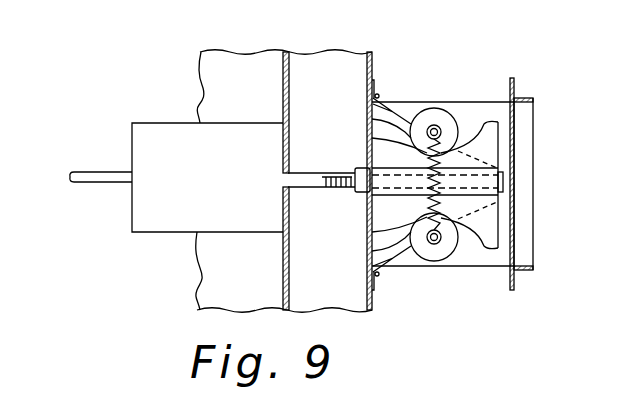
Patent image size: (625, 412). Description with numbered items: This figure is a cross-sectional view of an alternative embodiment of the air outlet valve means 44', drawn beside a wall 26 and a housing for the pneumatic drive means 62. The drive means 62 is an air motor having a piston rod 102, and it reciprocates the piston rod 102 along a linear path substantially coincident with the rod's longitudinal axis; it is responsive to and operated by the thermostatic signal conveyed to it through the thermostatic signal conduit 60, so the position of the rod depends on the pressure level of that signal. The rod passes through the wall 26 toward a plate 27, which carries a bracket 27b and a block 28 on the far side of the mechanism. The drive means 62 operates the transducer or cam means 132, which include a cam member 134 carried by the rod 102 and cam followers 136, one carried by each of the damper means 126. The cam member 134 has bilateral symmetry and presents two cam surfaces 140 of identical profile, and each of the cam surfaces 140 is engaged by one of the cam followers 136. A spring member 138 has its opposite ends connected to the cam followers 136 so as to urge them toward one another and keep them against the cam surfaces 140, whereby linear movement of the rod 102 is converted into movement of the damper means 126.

The housing wall 26 is at (203, 60).
The pneumatic drive means 62 is at (163, 122).
The thermostatic signal conduit 60 is at (103, 170).
The piston rod 102 is at (299, 173).
The air outlet valve means 44' is at (451, 141).
The wall plate 27 is at (491, 91).
The pivot bracket 27b is at (402, 107).
The support block 28 is at (523, 137).
The damper means 126 is at (393, 119).
The cam means 132 is at (505, 157).
The cam member 134 is at (490, 218).
The cam followers 136 is at (432, 108).
The spring member 138 is at (371, 217).
The cam surfaces 140 is at (482, 122).